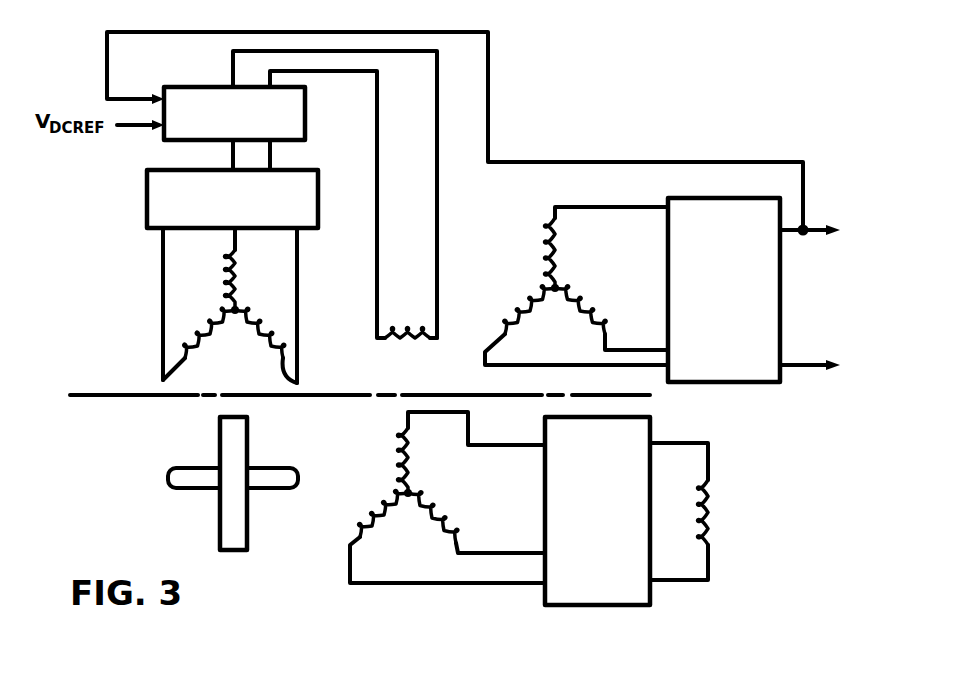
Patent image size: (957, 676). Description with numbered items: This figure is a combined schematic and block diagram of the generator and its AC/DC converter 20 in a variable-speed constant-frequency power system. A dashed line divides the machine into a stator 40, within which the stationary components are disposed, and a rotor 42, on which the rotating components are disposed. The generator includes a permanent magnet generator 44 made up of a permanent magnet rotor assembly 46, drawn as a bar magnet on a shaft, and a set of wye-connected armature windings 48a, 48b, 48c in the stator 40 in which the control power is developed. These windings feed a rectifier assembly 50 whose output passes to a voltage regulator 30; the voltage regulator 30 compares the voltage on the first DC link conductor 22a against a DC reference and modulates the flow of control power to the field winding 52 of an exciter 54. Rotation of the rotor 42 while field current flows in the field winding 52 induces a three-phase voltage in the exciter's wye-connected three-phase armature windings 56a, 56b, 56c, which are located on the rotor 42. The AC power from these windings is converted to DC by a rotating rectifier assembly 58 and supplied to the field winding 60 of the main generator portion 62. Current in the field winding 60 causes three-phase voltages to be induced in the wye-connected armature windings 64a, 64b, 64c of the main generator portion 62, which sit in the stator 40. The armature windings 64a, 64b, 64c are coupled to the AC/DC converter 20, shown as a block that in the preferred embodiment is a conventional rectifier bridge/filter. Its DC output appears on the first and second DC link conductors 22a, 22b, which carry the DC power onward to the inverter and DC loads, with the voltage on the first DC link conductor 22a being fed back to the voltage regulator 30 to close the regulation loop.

The AC/DC converter 20 is at (697, 208).
The first DC link conductor 22a is at (791, 228).
The second DC link conductor 22b is at (795, 368).
The voltage regulator 30 is at (305, 100).
The stator 40 is at (136, 331).
The rotor 42 is at (95, 406).
The permanent magnet generator 44 is at (173, 406).
The permanent magnet rotor assembly 46 is at (222, 458).
The armature winding 48a is at (228, 263).
The armature winding 48b is at (220, 314).
The armature winding 48c is at (300, 385).
The rectifier assembly 50 is at (157, 211).
The field winding 52 is at (378, 348).
The exciter 54 is at (437, 357).
The three-phase armature winding 56a is at (400, 440).
The three-phase armature winding 56b is at (388, 502).
The three-phase armature winding 56c is at (436, 512).
The rotating rectifier assembly 58 is at (612, 602).
The field winding 60 is at (718, 520).
The main generator portion 62 is at (660, 405).
The armature winding 64a is at (553, 228).
The armature winding 64b is at (538, 295).
The armature winding 64c is at (585, 315).